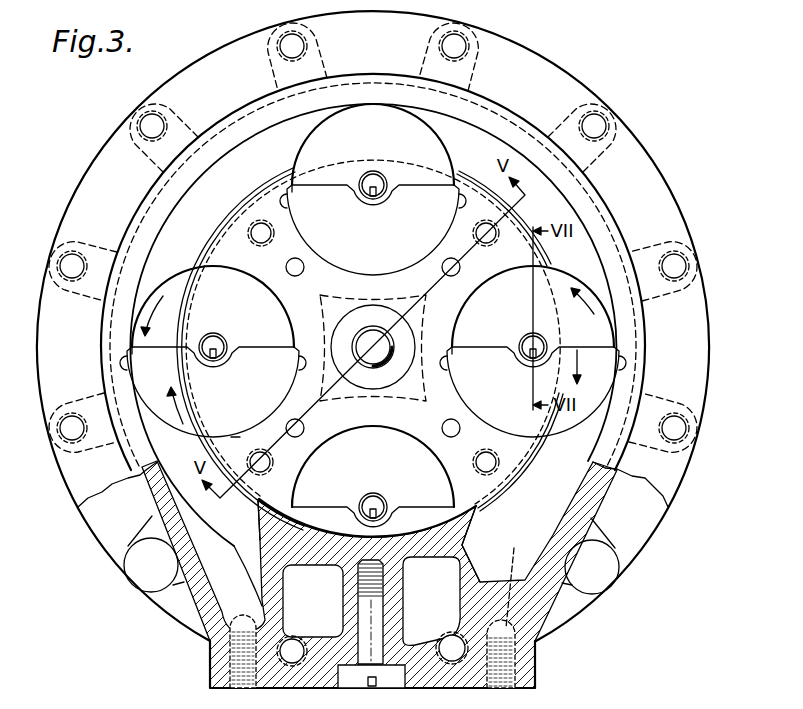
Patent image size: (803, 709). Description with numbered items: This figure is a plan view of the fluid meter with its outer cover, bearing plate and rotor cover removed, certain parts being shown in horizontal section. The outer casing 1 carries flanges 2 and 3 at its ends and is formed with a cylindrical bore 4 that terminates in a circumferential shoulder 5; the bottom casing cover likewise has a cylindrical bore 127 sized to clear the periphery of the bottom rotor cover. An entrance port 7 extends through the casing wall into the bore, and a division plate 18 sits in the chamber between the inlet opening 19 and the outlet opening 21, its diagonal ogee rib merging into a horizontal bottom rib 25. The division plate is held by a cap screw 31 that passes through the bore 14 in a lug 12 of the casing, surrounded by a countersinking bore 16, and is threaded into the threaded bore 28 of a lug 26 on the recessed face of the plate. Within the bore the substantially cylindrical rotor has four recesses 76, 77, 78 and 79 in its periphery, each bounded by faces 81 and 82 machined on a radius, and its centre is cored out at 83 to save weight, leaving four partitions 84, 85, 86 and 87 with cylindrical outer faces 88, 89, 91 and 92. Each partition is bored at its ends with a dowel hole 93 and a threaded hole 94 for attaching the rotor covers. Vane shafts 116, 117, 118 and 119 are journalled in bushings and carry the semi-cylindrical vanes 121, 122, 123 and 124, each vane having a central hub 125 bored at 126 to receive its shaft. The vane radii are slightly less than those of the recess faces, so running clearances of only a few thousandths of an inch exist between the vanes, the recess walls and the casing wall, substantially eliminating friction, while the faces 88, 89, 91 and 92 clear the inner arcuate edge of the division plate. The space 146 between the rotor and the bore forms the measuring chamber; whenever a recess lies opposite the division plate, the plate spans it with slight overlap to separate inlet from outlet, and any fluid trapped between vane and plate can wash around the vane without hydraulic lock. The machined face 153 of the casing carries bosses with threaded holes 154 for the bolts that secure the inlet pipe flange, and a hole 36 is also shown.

The outer casing 1 is at (648, 518).
The flange 2 is at (672, 503).
The flange 3 is at (640, 545).
The cylindrical bore 4 is at (593, 233).
The circumferential shoulder 5 is at (583, 210).
The entrance port 7 is at (317, 571).
The lug 12 is at (404, 616).
The bore 14 is at (296, 638).
The countersinking bore 16 is at (407, 680).
The division plate 18 is at (463, 537).
The inlet opening 19 is at (227, 597).
The outlet opening 21 is at (514, 548).
The bottom rib 25 is at (323, 586).
The lug 26 is at (450, 578).
The threaded bore 28 is at (390, 513).
The cap screw 31 is at (362, 676).
The bolt hole 36 is at (128, 545).
The recess 76 is at (458, 446).
The recess 77 is at (277, 413).
The recess 78 is at (397, 277).
The recess 79 is at (449, 377).
The recess face 81 is at (296, 203).
The recess face 82 is at (456, 203).
The cored-out central portion 83 is at (323, 348).
The partition 84 is at (231, 437).
The partition 85 is at (248, 216).
The partition 86 is at (508, 224).
The partition 87 is at (519, 466).
The cylindrical outer face 88 is at (257, 503).
The cylindrical outer face 89 is at (233, 222).
The cylindrical outer face 91 is at (456, 200).
The cylindrical outer face 92 is at (532, 460).
The bore 93 is at (447, 260).
The threaded bore 94 is at (490, 222).
The vane shaft 116 is at (366, 499).
The vane shaft 117 is at (215, 343).
The vane shaft 118 is at (383, 180).
The vane shaft 119 is at (528, 339).
The vane 121 is at (345, 494).
The vane 122 is at (167, 326).
The vane 123 is at (308, 135).
The vane 124 is at (570, 283).
The central hub 125 is at (387, 201).
The hub bore 126 is at (370, 177).
The cylindrical bore 127 is at (218, 247).
The measuring chamber 146 is at (520, 165).
The machined face 153 is at (535, 688).
The threaded hole 154 is at (229, 657).